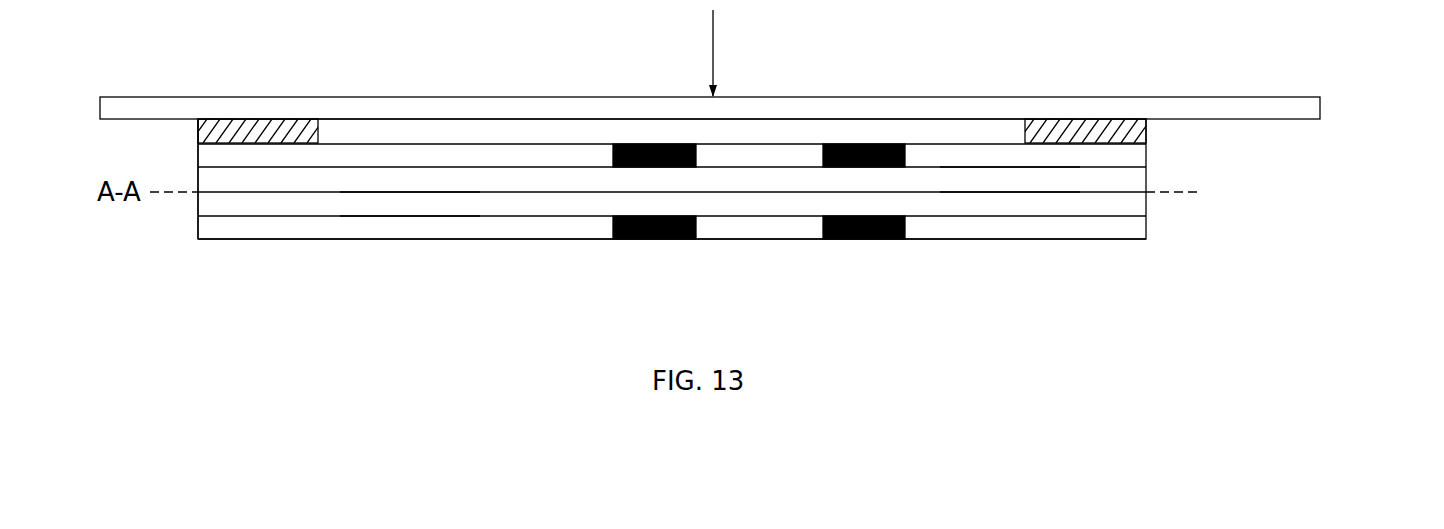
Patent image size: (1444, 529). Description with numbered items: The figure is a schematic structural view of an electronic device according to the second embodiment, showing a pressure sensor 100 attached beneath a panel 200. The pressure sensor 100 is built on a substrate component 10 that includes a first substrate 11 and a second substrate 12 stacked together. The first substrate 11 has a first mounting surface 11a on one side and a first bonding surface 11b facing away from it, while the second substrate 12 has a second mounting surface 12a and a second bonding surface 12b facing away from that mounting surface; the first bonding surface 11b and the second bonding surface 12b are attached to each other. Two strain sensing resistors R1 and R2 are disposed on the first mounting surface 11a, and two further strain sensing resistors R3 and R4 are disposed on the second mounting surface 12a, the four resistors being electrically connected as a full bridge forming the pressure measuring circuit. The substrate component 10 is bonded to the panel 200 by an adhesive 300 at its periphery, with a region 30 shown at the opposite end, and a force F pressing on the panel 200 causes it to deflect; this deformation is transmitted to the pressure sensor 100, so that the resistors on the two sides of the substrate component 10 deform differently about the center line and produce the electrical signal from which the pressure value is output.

The panel 200 is at (754, 109).
The adhesive 300 is at (1138, 137).
The adhesive layer (left) 30 is at (235, 131).
The pressure sensor 100 is at (1216, 212).
The substrate component 10 is at (197, 203).
The first substrate 11 is at (1103, 183).
The first mounting surface 11a is at (1010, 166).
The first bonding surface 11b is at (1012, 196).
The second substrate 12 is at (270, 202).
The second mounting surface 12a is at (413, 219).
The second bonding surface 12b is at (412, 189).
The strain sensing resistor R1 is at (657, 144).
The strain sensing resistor R2 is at (869, 144).
The strain sensing resistor R3 is at (655, 239).
The strain sensing resistor R4 is at (872, 239).
The applied force F is at (729, 53).